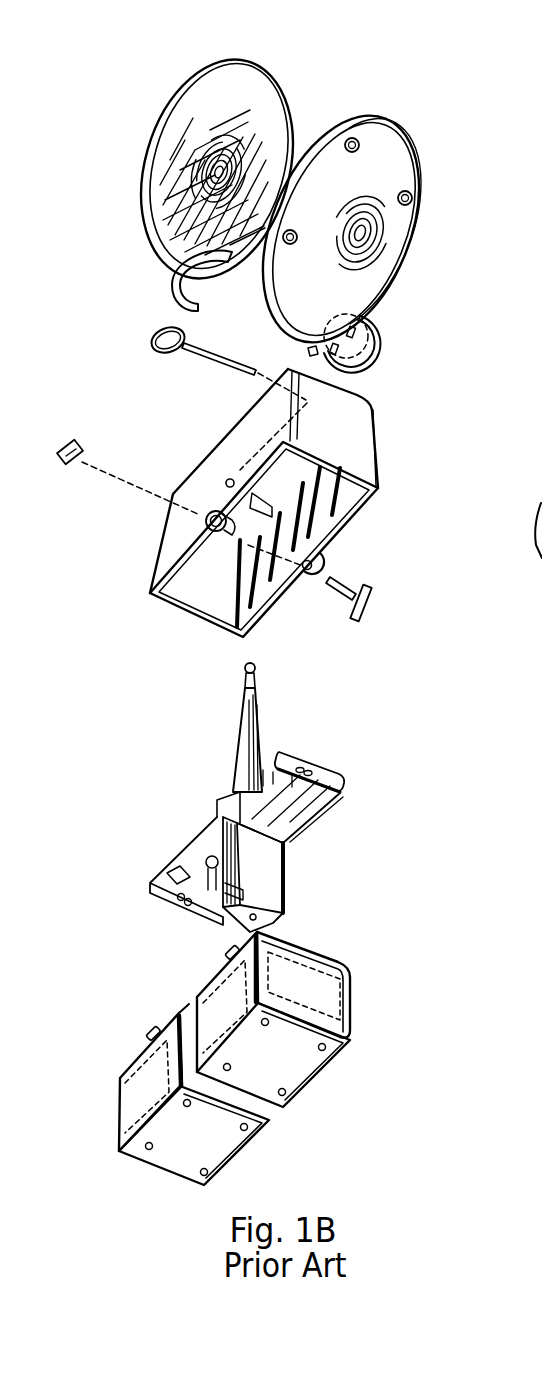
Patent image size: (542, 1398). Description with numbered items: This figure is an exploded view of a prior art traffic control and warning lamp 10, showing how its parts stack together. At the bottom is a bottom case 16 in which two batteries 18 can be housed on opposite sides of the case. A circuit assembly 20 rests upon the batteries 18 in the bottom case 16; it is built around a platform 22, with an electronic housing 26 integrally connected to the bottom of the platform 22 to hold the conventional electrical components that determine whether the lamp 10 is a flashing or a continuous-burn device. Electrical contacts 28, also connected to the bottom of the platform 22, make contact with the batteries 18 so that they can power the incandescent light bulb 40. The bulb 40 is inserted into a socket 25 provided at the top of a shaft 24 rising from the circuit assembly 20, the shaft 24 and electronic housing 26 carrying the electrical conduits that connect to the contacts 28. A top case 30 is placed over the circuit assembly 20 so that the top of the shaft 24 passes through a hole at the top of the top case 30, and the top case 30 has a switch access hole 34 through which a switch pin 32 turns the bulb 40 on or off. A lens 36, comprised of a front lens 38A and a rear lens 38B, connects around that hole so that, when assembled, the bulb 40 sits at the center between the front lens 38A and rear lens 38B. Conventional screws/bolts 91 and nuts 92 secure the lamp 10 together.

The traffic control and warning lamp 10 is at (180, 80).
The bottom case 16 is at (350, 983).
The batteries 18 is at (140, 1092).
The circuit assembly 20 is at (237, 797).
The platform 22 is at (167, 890).
The shaft 24 is at (238, 730).
The socket 25 is at (245, 693).
The electronic housing 26 is at (268, 895).
The electrical contacts 28 is at (293, 787).
The top case 30 is at (355, 420).
The switch pin 32 is at (188, 354).
The switch access hole 34 is at (226, 482).
The lens 36 is at (321, 94).
The front lens 38A is at (167, 147).
The rear lens 38B is at (393, 275).
The incandescent light bulb 40 is at (257, 672).
The screws/bolts 91 is at (343, 590).
The nuts 92 is at (65, 465).